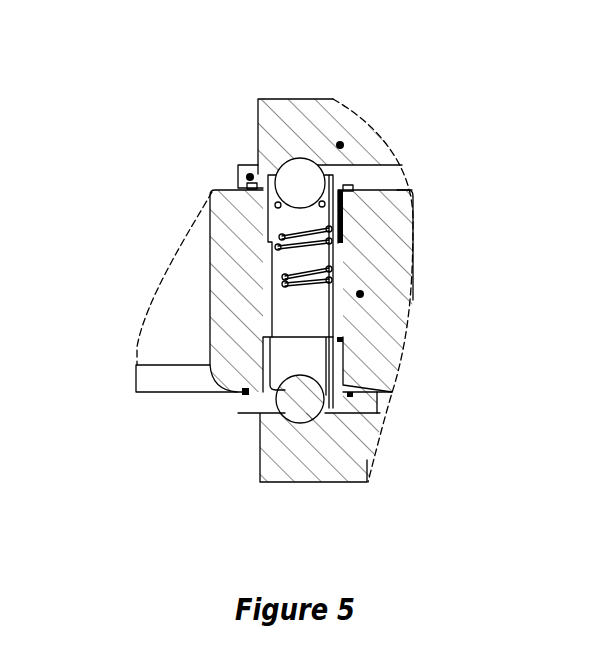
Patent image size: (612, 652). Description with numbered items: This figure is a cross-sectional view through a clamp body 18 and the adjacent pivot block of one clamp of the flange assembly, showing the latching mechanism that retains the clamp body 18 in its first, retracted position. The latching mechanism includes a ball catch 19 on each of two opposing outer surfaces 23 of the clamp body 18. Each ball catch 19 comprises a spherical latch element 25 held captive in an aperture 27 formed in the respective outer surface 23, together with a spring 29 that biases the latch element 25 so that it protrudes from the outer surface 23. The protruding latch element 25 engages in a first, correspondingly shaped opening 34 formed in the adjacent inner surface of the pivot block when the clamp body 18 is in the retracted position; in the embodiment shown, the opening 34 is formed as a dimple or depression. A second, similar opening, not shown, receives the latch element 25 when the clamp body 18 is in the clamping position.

The clamp body 18 is at (392, 299).
The ball catch 19 is at (315, 147).
The outer surface 23 is at (397, 190).
The spherical latch element 25 is at (302, 177).
The aperture 27 is at (342, 222).
The spring 29 is at (293, 236).
The first opening 34 is at (297, 158).